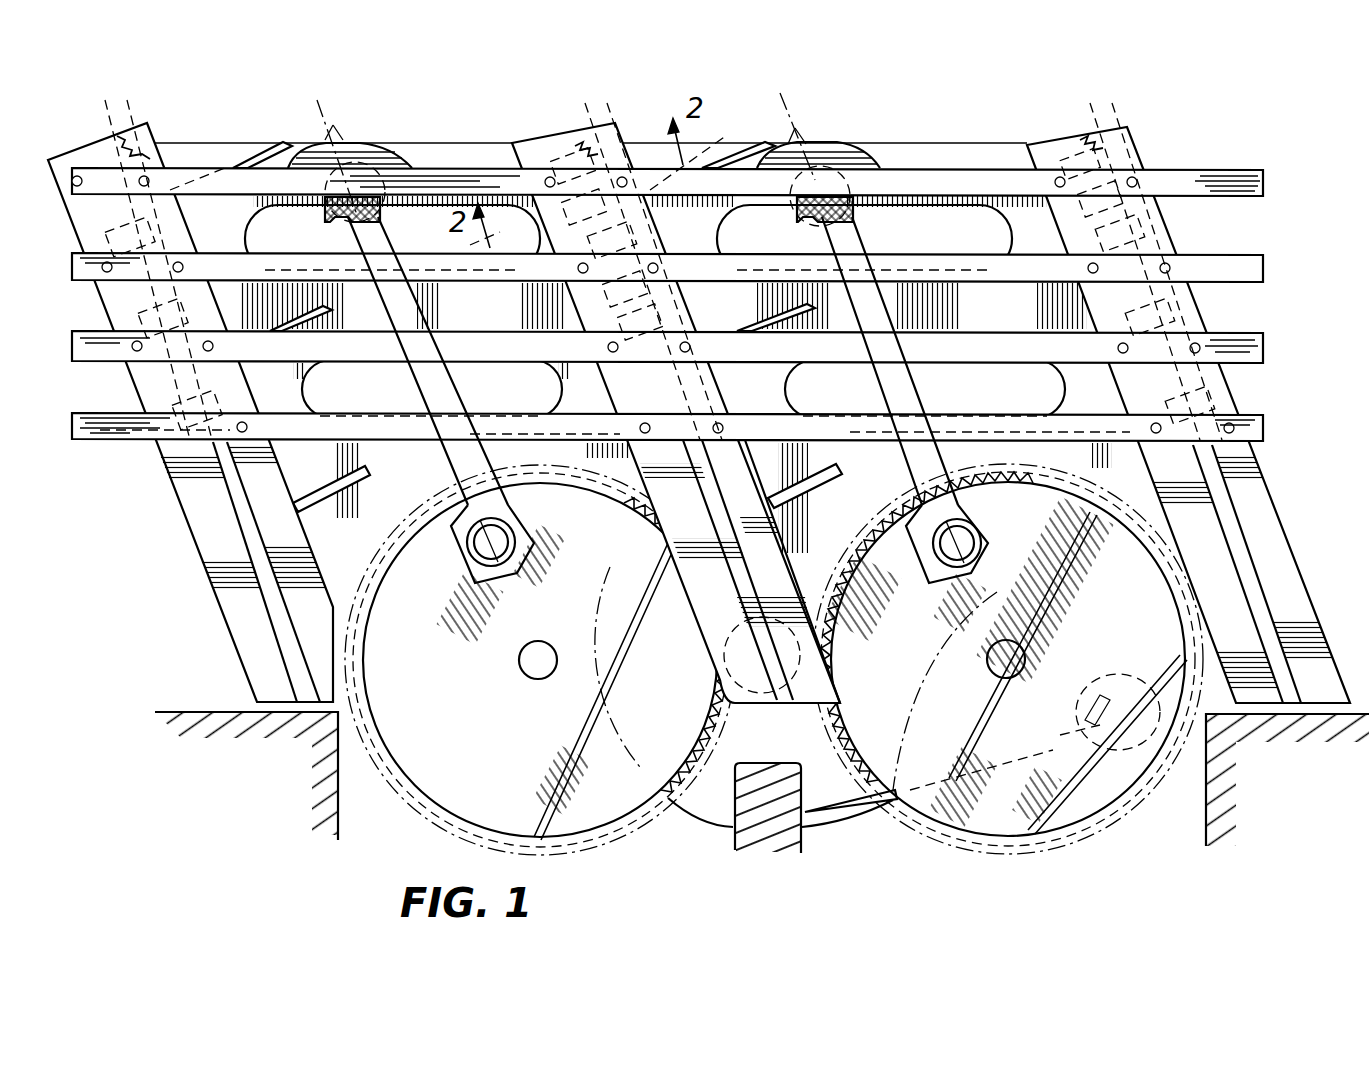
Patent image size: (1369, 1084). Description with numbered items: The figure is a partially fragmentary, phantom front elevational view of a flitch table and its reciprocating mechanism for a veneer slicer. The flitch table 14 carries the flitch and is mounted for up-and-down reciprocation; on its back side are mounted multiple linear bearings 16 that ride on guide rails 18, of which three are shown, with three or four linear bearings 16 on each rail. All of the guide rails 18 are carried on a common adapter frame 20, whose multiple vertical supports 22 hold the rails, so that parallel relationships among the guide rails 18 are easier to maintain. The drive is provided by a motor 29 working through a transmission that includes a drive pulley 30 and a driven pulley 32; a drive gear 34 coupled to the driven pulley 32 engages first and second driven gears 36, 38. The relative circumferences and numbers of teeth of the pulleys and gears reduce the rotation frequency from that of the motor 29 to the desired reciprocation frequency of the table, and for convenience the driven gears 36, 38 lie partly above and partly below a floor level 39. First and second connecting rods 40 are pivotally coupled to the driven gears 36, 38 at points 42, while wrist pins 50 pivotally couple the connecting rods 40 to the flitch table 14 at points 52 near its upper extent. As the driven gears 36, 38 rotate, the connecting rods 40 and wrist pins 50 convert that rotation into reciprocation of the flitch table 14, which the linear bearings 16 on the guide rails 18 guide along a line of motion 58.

The flitch table 14 is at (1215, 172).
The linear bearings 16 is at (105, 125).
The guide rails 18 is at (240, 517).
The adapter frame 20 is at (223, 593).
The vertical supports 22 is at (148, 132).
The motor 29 is at (1118, 656).
The drive pulley 30 is at (1080, 730).
The driven pulley 32 is at (925, 720).
The drive gear 34 is at (712, 770).
The first driven gear 36 is at (686, 758).
The second driven gear 38 is at (838, 752).
The floor level 39 is at (1214, 709).
The connecting rods 40 is at (348, 227).
The pivot points 42 is at (515, 540).
The wrist pins 50 is at (398, 165).
The coupling points 52 is at (395, 140).
The line of motion 58 is at (340, 125).